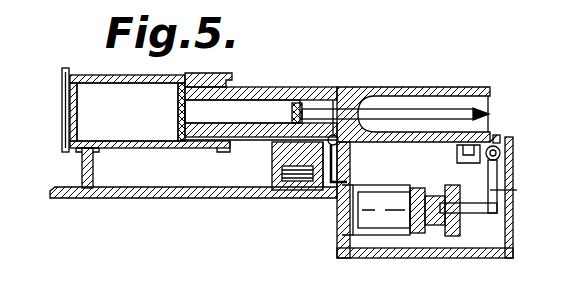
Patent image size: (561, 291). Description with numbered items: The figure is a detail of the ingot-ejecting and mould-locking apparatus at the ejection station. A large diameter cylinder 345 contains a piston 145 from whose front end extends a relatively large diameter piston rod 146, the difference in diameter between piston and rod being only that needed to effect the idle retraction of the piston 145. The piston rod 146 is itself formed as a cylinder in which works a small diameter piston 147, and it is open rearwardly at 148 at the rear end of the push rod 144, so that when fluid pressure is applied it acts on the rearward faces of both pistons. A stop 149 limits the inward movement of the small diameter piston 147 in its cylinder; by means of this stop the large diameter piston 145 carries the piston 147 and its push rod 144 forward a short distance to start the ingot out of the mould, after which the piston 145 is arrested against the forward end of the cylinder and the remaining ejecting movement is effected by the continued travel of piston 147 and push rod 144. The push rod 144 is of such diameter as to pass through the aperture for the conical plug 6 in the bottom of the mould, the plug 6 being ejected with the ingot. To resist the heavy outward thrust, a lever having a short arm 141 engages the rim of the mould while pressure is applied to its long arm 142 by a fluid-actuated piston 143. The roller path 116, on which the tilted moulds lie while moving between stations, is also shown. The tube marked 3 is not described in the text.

The large diameter cylinder 345 is at (62, 112).
The piston 145 is at (187, 80).
The rear opening of piston rod 148 is at (183, 112).
The piston rod 146 is at (267, 68).
The stop 149 is at (190, 101).
The small diameter piston 147 is at (297, 100).
The tube 3 is at (453, 90).
The push rod 144 is at (398, 113).
The conical plug 6 is at (489, 112).
The short arm 141 is at (494, 145).
The roller path 116 is at (457, 155).
The long arm 142 is at (517, 190).
The fluid-actuated piston 143 is at (430, 212).